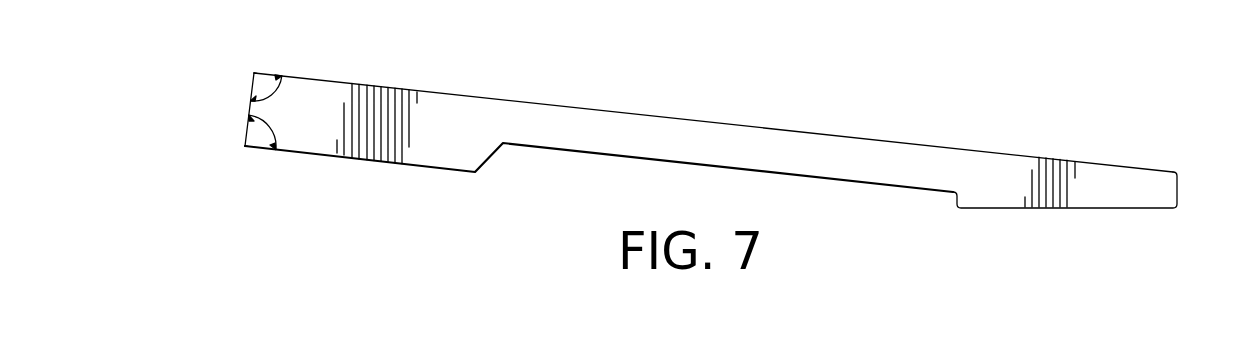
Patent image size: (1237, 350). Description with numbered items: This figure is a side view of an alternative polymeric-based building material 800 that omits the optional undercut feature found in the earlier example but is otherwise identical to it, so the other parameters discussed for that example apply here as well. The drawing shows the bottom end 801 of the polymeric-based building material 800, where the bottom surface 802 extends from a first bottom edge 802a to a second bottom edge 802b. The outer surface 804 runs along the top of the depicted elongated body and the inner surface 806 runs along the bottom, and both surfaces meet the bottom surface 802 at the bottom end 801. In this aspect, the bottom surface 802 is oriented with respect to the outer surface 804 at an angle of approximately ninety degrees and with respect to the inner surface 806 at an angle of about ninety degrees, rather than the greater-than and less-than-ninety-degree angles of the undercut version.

The polymeric-based building material 800 is at (1050, 52).
The bottom end 801 is at (223, 93).
The bottom surface 802 is at (252, 110).
The first bottom edge 802a is at (254, 73).
The second bottom edge 802b is at (245, 147).
The outer surface 804 is at (322, 77).
The inner surface 806 is at (318, 155).